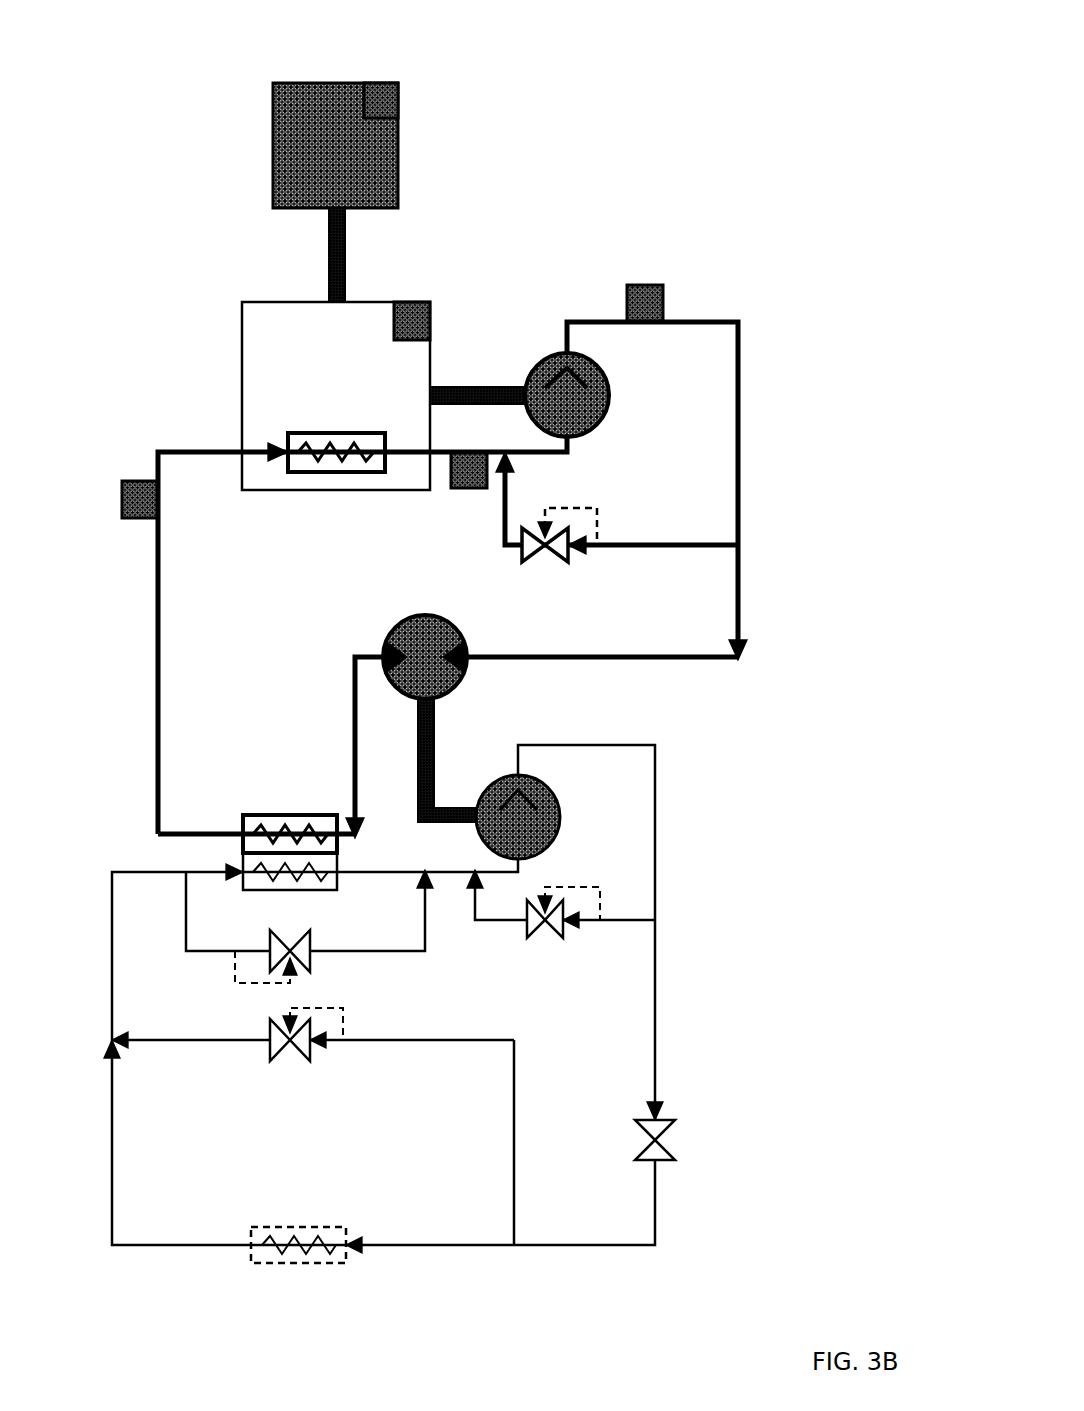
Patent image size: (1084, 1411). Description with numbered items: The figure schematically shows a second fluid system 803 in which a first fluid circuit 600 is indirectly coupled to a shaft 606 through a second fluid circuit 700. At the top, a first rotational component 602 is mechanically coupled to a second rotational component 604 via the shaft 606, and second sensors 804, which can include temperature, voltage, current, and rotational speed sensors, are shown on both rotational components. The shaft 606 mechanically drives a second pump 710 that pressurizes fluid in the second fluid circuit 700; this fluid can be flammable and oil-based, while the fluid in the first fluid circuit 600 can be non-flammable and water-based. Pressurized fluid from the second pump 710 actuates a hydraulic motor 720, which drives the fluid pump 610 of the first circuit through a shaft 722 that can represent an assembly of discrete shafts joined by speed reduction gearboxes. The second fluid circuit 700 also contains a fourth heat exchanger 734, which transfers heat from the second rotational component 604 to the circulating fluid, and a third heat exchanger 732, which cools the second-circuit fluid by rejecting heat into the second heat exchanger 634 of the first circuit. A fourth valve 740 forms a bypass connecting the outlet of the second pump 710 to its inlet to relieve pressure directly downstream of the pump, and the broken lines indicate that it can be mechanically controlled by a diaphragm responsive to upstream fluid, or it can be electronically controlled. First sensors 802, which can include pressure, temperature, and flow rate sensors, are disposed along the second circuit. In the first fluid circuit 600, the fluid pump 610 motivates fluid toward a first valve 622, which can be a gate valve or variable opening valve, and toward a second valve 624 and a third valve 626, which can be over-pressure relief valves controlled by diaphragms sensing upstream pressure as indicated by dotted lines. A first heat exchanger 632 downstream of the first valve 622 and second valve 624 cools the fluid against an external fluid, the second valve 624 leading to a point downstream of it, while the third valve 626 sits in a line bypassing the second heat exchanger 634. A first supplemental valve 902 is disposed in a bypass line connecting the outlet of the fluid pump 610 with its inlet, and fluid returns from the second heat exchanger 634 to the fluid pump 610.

The second fluid system 803 is at (790, 178).
The first rotational component 602 is at (398, 140).
The second sensor 804 is at (385, 83).
The second rotational component 604 is at (365, 300).
The shaft 606 is at (452, 387).
The fourth heat exchanger 734 is at (308, 433).
The first sensor 802 is at (646, 285).
The second fluid circuit 700 is at (778, 497).
The second pump 710 is at (608, 405).
The fourth valve 740 is at (555, 562).
The hydraulic motor 720 is at (440, 618).
The shaft 722 is at (436, 732).
The third heat exchanger 732 is at (292, 815).
The first fluid circuit 600 is at (712, 932).
The fluid pump 610 is at (556, 792).
The second heat exchanger 634 is at (305, 890).
The third valve 626 is at (310, 960).
The second valve 624 is at (282, 1066).
The first supplemental valve 902 is at (530, 940).
The first valve 622 is at (678, 1124).
The first heat exchanger 632 is at (292, 1264).